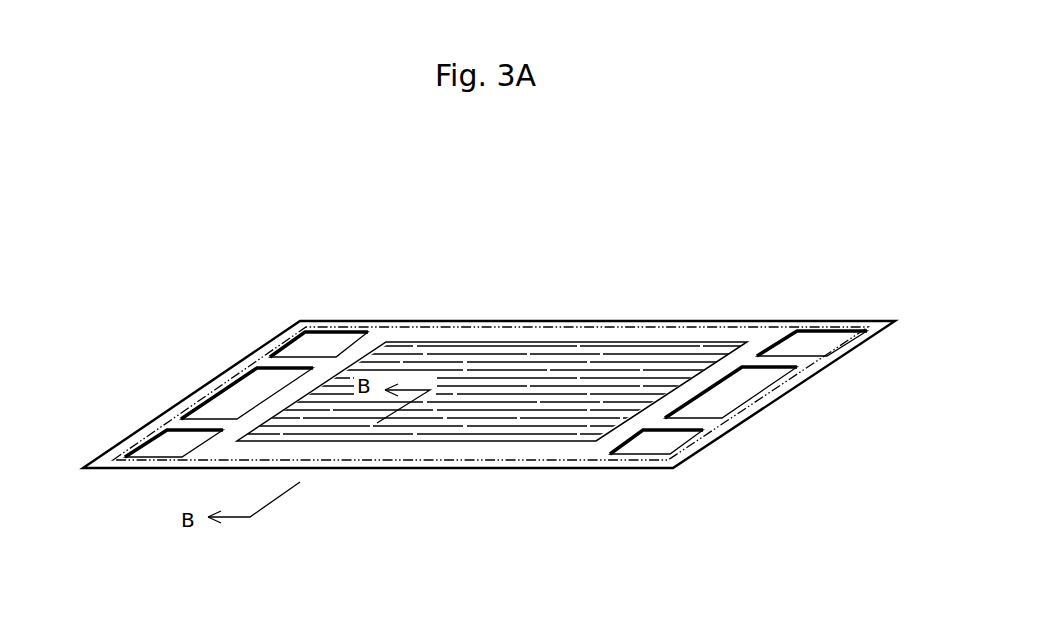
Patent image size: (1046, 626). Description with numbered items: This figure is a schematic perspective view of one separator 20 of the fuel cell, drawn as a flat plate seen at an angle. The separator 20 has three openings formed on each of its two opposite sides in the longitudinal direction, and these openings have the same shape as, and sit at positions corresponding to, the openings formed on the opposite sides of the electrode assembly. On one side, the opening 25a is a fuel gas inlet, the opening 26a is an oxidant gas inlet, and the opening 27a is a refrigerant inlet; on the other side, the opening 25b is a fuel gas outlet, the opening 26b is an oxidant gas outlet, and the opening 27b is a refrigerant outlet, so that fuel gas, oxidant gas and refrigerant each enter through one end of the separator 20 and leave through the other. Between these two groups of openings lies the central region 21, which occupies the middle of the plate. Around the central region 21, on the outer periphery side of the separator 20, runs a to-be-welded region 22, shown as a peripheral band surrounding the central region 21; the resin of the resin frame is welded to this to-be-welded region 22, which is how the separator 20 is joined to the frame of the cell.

The separator 20 is at (302, 313).
The central region 21 is at (443, 416).
The to-be-welded region 22 is at (517, 462).
The opening 25a is at (806, 340).
The opening 25b is at (165, 446).
The opening 26a is at (653, 444).
The opening 26b is at (315, 348).
The opening 27a is at (730, 394).
The opening 27b is at (247, 400).